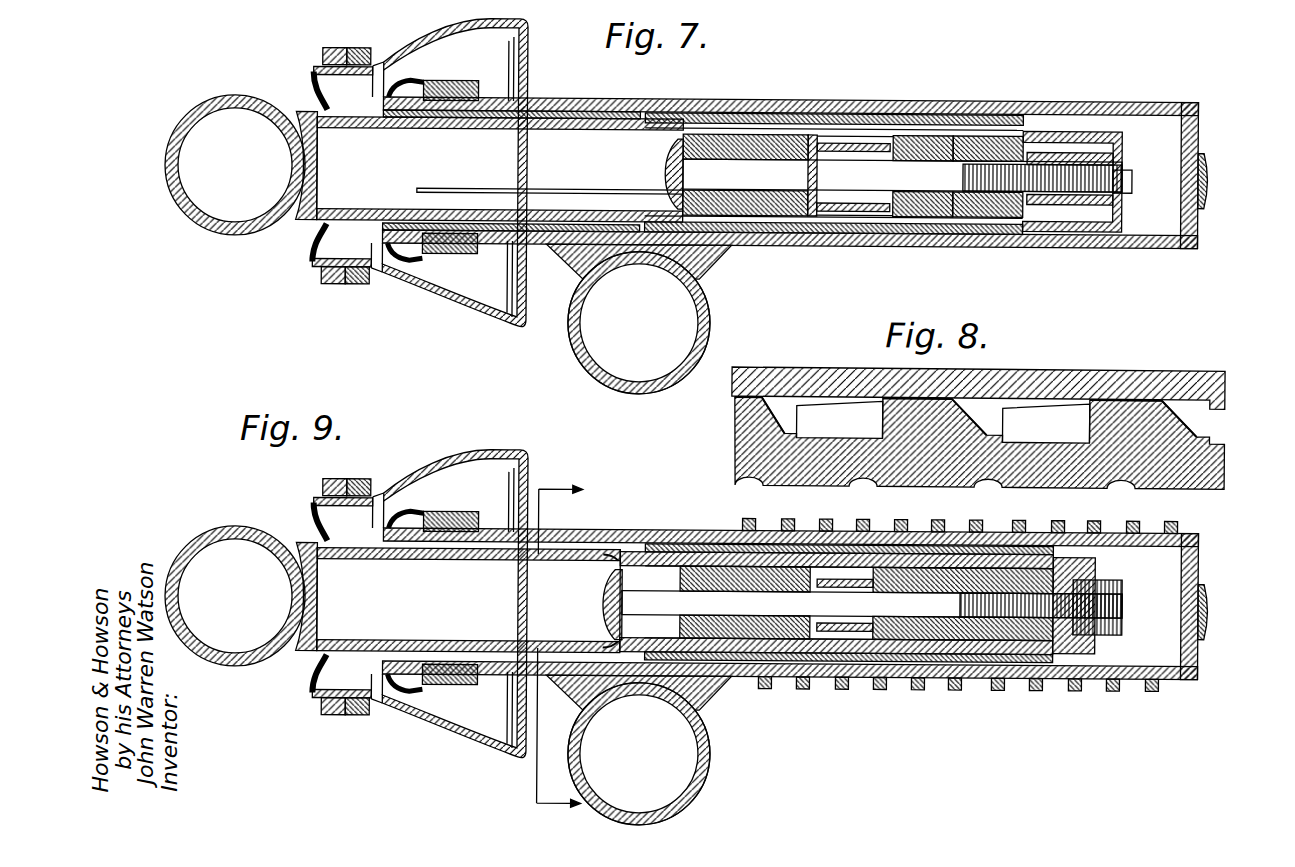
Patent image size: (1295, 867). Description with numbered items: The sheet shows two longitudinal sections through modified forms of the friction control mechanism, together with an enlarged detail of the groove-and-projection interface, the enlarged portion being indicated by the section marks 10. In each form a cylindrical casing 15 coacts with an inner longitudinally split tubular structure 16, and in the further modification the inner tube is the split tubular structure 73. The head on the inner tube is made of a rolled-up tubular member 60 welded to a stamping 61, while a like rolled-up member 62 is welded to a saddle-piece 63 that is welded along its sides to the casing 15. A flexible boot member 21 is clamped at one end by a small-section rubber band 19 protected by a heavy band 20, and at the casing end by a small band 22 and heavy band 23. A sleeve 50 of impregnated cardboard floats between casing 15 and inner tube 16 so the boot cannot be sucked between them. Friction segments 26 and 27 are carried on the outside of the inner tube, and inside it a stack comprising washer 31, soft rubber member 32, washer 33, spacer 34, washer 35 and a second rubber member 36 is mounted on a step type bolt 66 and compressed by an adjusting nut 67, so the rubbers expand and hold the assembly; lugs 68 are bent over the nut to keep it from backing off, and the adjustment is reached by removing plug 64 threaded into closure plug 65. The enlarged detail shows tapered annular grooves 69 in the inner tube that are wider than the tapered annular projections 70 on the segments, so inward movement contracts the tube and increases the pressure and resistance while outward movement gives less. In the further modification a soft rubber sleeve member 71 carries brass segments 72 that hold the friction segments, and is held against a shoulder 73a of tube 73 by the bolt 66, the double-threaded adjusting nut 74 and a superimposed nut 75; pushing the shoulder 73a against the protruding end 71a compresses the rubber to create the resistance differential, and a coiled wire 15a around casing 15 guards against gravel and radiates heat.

In FIG. 9, the section line 10 is at (550, 644).
In FIG. 7, the cylindrical casing 15 is at (797, 97).
In FIG. 9, the cylindrical casing 15 is at (700, 528).
In FIG. 9, the coiled wire 15a is at (1138, 508).
In FIG. 7, the longitudinally split tubular structure 16 is at (525, 208).
In FIG. 8, the longitudinally split tubular structure 16 is at (857, 383).
In FIG. 7, the rubber band 19 is at (330, 48).
In FIG. 9, the rubber band 19 is at (337, 479).
In FIG. 7, the rubber band 20 is at (352, 48).
In FIG. 9, the rubber band 20 is at (362, 479).
In FIG. 7, the boot member 21 is at (508, 71).
In FIG. 9, the boot member 21 is at (472, 449).
In FIG. 7, the rubber band 22 is at (428, 262).
In FIG. 9, the rubber band 22 is at (428, 693).
In FIG. 7, the rubber band 23 is at (456, 256).
In FIG. 9, the rubber band 23 is at (456, 688).
In FIG. 7, the segmental member 26 is at (890, 112).
In FIG. 9, the segmental member 26 is at (815, 542).
In FIG. 7, the segmental member 27 is at (868, 235).
In FIG. 8, the segmental member 27 is at (948, 483).
In FIG. 9, the segmental member 27 is at (900, 660).
In FIG. 7, the washer 31 is at (1050, 130).
In FIG. 7, the cylindrically shaped resilient member 32 is at (980, 135).
In FIG. 9, the cylindrically shaped resilient member 32 is at (978, 636).
In FIG. 7, the washer 33 is at (900, 158).
In FIG. 7, the spacer 34 is at (858, 148).
In FIG. 9, the spacer 34 is at (660, 586).
In FIG. 7, the washer 35 is at (812, 150).
In FIG. 7, the second cylindrically shaped resilient member 36 is at (727, 132).
In FIG. 9, the second cylindrically shaped resilient member 36 is at (757, 636).
In FIG. 7, the sleeve 50 is at (612, 110).
In FIG. 7, the rolled-up tubular member 60 is at (196, 118).
In FIG. 9, the rolled-up tubular member 60 is at (196, 549).
In FIG. 7, the stamping 61 is at (313, 72).
In FIG. 9, the stamping 61 is at (313, 503).
In FIG. 7, the rolled-up tubular member 62 is at (592, 350).
In FIG. 9, the rolled-up tubular member 62 is at (598, 760).
In FIG. 7, the saddle-piece 63 is at (712, 252).
In FIG. 9, the saddle-piece 63 is at (705, 715).
In FIG. 7, the plug 64 is at (1208, 176).
In FIG. 9, the plug 64 is at (1208, 607).
In FIG. 7, the closure plug 65 is at (1198, 220).
In FIG. 9, the closure plug 65 is at (1196, 656).
In FIG. 7, the step type bolt 66 is at (665, 167).
In FIG. 9, the step type bolt 66 is at (612, 599).
In FIG. 7, the adjusting nut 67 is at (1112, 152).
In FIG. 7, the lugs 68 is at (1125, 188).
In FIG. 8, the tapered annular groove 69 is at (742, 397).
In FIG. 8, the tapered annular projection 70 is at (751, 395).
In FIG. 9, the sleeve member 71 is at (798, 650).
In FIG. 9, the protruding end 71a is at (615, 647).
In FIG. 9, the segments 72 is at (640, 549).
In FIG. 9, the inner tubular structure 73 is at (462, 596).
In FIG. 9, the shoulder 73a is at (615, 555).
In FIG. 9, the adjusting nut 74 is at (1115, 628).
In FIG. 9, the superimposed nut 75 is at (1095, 575).